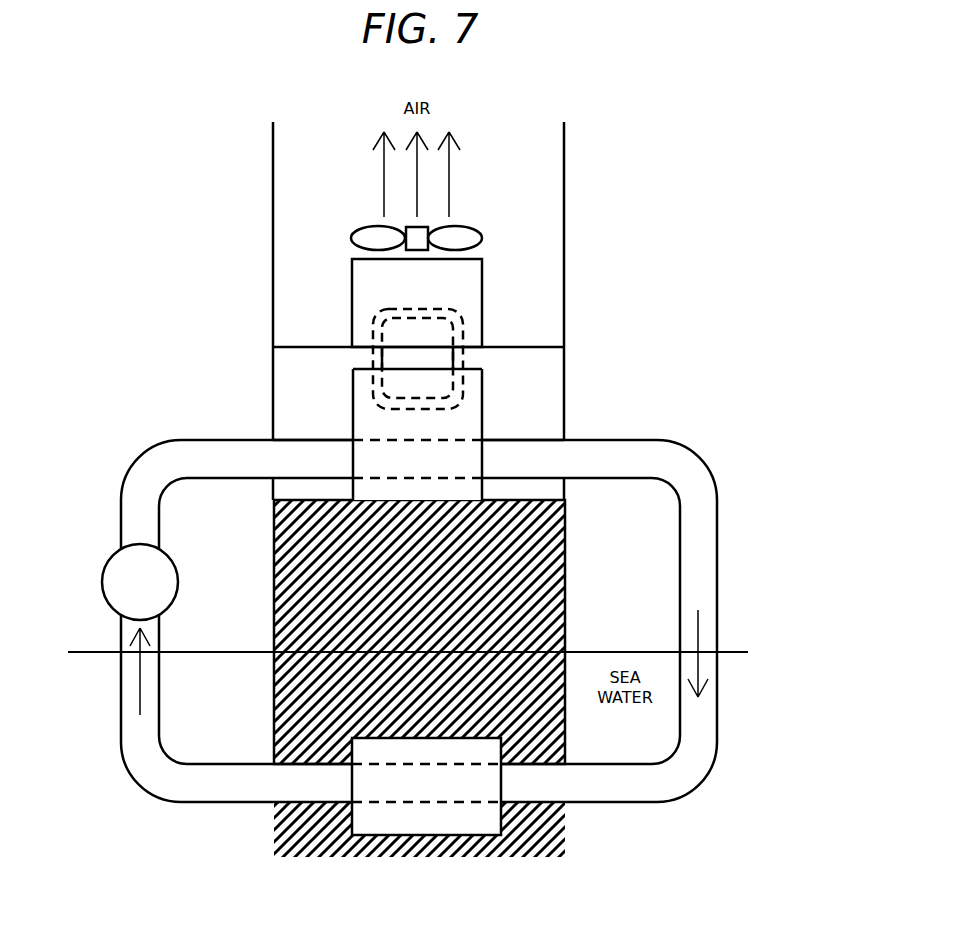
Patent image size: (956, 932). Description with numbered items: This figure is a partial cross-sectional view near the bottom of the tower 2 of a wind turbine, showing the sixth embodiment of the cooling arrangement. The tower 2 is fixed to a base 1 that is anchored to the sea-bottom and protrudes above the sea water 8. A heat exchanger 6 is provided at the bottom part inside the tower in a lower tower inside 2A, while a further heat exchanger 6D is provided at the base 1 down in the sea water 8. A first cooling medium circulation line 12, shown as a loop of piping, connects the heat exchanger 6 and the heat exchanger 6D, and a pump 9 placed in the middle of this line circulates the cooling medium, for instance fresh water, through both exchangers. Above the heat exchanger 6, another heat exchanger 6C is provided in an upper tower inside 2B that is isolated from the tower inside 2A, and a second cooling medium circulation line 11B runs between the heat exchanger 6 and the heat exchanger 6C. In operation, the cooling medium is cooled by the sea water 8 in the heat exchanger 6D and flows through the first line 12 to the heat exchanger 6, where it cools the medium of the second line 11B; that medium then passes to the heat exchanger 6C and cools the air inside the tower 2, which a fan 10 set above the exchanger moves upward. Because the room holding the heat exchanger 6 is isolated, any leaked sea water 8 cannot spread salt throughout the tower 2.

The base 1 is at (565, 558).
The tower 2 is at (564, 205).
The tower inside 2A is at (556, 416).
The tower inside 2B is at (556, 311).
The heat exchanger 6 is at (482, 401).
The heat exchanger 6C is at (482, 290).
The heat exchanger 6D is at (425, 828).
The sea water 8 is at (598, 652).
The pump 9 is at (175, 555).
The fan 10 is at (468, 232).
The second cooling medium circulation line 11B is at (417, 308).
The first cooling medium circulation line 12 is at (717, 505).